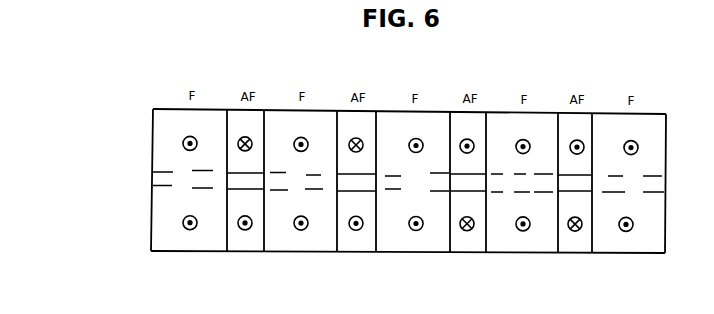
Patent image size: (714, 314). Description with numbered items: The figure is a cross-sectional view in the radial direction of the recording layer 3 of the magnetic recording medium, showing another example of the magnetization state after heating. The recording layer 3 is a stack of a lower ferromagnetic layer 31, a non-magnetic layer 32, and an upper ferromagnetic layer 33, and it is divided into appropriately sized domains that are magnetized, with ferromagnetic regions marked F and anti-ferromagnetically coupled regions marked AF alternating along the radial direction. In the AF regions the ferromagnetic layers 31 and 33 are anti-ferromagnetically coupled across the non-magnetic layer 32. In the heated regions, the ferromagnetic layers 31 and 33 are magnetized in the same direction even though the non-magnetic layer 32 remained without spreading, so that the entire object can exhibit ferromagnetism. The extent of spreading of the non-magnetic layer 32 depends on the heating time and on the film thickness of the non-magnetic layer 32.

The recording layer 3 is at (100, 108).
The ferromagnetic layer 31 is at (162, 227).
The non-magnetic layer 32 is at (160, 178).
The ferromagnetic layer 33 is at (162, 135).